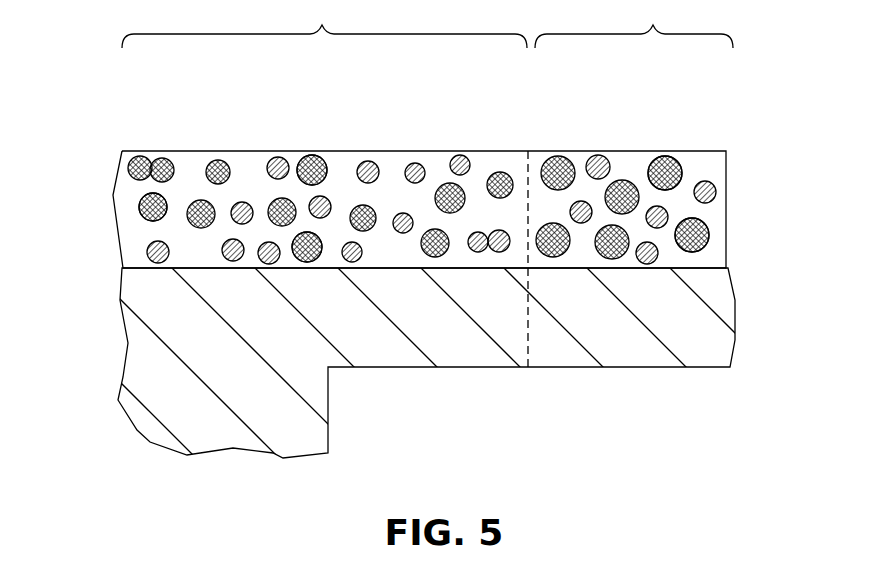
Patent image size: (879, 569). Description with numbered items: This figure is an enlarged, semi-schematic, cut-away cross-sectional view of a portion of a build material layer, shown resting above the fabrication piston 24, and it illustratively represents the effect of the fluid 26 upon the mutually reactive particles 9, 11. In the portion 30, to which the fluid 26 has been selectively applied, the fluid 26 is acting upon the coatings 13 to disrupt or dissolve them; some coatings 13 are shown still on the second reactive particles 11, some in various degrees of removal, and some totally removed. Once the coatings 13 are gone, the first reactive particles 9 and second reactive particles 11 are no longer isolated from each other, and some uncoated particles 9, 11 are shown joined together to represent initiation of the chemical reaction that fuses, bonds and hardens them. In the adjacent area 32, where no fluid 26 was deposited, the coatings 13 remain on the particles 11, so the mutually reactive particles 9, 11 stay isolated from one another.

The first reactive particles 9 is at (158, 158).
The second reactive particles 11 is at (140, 156).
The coating 13 is at (143, 199).
The fabrication piston 24 is at (333, 408).
The fluid 26 is at (490, 152).
The portion of the build material 30 is at (324, 24).
The area 32 is at (634, 24).